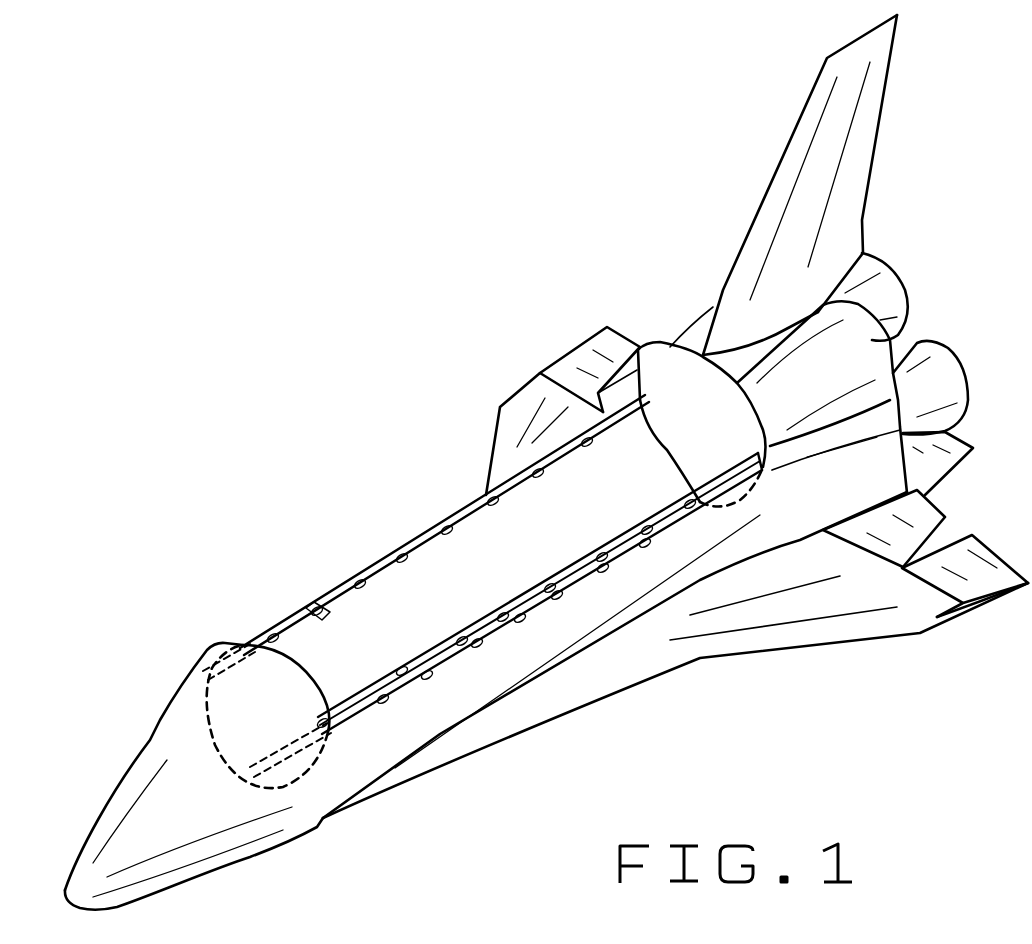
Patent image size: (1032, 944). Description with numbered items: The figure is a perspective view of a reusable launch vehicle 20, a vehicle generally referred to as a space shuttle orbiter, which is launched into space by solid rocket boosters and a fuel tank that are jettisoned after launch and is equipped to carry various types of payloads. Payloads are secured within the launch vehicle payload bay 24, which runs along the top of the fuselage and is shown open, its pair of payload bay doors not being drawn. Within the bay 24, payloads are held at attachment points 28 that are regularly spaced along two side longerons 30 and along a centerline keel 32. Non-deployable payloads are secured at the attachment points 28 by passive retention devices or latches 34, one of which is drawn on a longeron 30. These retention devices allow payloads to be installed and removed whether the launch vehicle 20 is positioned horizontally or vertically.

The reusable launch vehicle 20 is at (329, 428).
The payload bay 24 is at (470, 602).
The attachment points 28 is at (497, 505).
The side longerons 30 is at (463, 507).
The centerline keel 32 is at (520, 596).
The passive retention devices or latches 34 is at (327, 610).